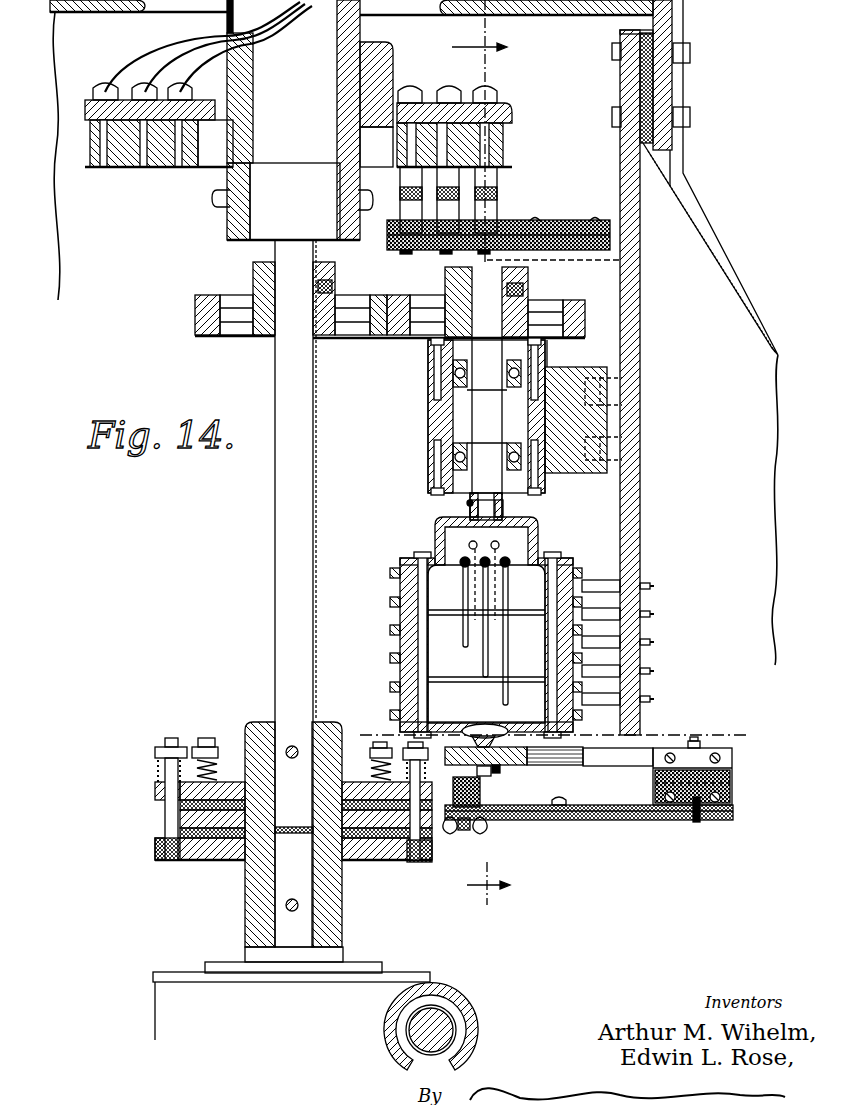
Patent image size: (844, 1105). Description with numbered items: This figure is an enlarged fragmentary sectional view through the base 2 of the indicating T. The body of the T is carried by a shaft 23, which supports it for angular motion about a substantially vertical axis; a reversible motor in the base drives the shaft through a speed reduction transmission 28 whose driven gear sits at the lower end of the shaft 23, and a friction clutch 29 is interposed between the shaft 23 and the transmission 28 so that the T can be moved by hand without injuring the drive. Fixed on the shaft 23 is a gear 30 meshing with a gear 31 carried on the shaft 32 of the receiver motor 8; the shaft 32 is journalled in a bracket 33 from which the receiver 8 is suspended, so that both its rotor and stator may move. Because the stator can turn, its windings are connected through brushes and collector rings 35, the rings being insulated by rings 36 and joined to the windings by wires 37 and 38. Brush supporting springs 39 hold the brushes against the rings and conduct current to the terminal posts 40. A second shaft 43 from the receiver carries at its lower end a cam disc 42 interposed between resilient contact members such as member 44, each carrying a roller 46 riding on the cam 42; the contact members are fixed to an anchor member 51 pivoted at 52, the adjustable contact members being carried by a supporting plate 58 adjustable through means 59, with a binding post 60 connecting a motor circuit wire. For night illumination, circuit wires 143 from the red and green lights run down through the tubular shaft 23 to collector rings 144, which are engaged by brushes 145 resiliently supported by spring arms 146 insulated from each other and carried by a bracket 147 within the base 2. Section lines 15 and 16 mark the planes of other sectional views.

The base 2 is at (722, 257).
The brush supporting springs 39 is at (593, 597).
The terminal posts 40 is at (652, 616).
The shaft 23 is at (240, 225).
The circuit wires 143 is at (190, 48).
The collector rings 144 is at (488, 147).
The ring-engaging brushes 145 is at (490, 172).
The spring arms 146 is at (407, 211).
The bracket 147 is at (574, 232).
The section line 15 is at (498, 452).
The gear 30 is at (212, 336).
The gear 31 is at (398, 340).
The bracket 33 is at (438, 422).
The shaft 32 is at (468, 503).
The wires 37 is at (482, 560).
The insulating rings 36 is at (392, 601).
The collector rings 35 is at (400, 644).
The receiver motor 8 is at (445, 588).
The wires 38 is at (467, 597).
The section line 16 is at (370, 728).
The cam disc 42 is at (525, 764).
The contact member 44 is at (577, 752).
The shaft 43 is at (498, 767).
The roller 46 is at (483, 774).
The binding post 60 is at (466, 826).
The anchor member 51 is at (733, 778).
The pivot 52 is at (695, 740).
The supporting plate 58 is at (511, 812).
The adjusting means 59 is at (565, 806).
The friction clutch 29 is at (157, 795).
The speed reduction transmission 28 is at (461, 992).